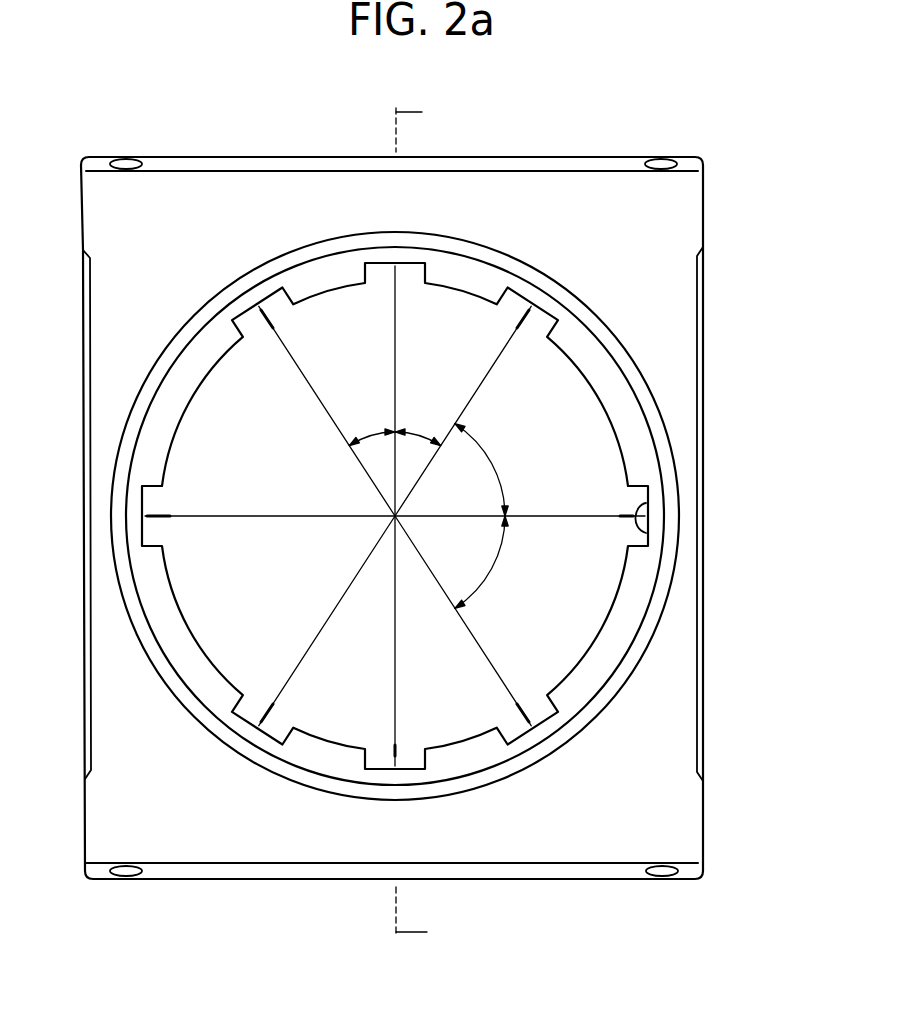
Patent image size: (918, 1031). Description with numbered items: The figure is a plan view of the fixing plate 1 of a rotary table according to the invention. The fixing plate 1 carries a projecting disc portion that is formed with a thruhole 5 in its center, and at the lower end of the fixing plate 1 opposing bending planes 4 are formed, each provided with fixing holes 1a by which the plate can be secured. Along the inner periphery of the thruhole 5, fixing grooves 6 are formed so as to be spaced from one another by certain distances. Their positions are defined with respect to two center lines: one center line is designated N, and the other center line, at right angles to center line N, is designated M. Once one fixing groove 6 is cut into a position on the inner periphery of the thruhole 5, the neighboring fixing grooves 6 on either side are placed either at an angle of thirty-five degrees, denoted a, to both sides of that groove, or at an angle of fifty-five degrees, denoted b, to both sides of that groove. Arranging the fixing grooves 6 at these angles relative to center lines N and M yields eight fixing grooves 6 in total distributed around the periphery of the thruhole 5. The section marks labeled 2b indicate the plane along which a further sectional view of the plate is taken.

The fixing plate 1 is at (716, 435).
The fixing holes 1a is at (660, 875).
The bending planes 4 is at (207, 870).
The thruhole 5 is at (573, 410).
The fixing grooves 6 is at (646, 530).
The center line M is at (245, 513).
The center line N is at (393, 685).
The angle of 35° a is at (394, 422).
The angle of 55° b is at (489, 516).
The section line 2b is at (438, 527).